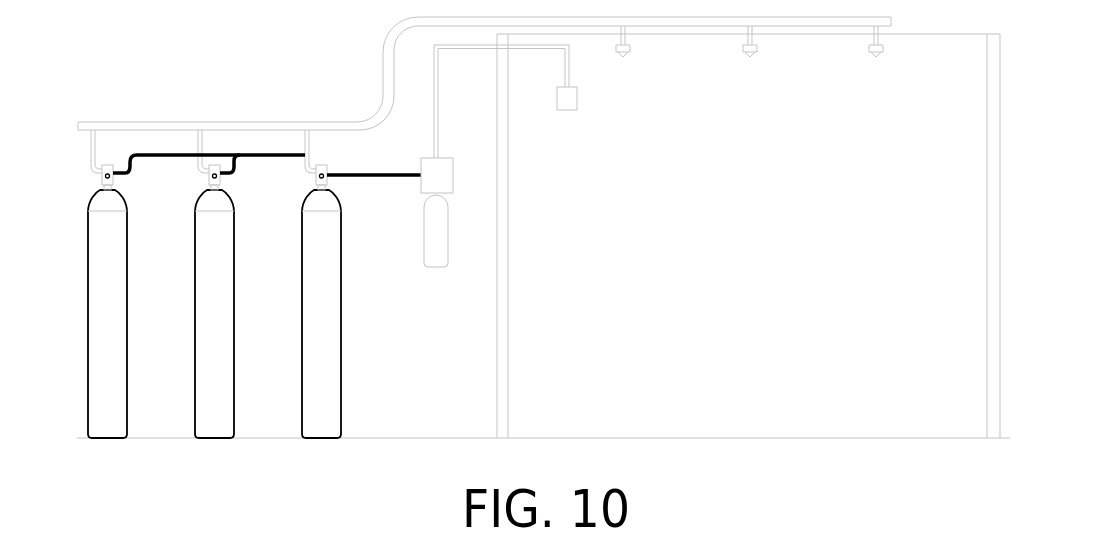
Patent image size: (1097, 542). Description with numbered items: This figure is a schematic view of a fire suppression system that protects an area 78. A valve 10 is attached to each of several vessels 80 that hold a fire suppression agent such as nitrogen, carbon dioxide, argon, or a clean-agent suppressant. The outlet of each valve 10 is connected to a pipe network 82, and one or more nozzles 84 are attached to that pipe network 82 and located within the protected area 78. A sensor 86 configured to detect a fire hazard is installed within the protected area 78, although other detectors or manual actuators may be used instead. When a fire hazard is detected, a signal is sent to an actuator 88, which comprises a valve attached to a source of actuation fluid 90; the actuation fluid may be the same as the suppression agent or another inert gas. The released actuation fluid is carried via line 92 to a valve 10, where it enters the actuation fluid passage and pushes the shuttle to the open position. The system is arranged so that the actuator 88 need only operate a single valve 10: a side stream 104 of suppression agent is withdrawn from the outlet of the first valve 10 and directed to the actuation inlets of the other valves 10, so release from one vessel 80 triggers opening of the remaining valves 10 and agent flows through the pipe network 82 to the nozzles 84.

The valve 10 is at (111, 178).
The protected area 78 is at (937, 203).
The vessels 80 is at (115, 343).
The pipe network 82 is at (327, 127).
The nozzles 84 is at (757, 49).
The sensor 86 is at (567, 106).
The actuator 88 is at (443, 174).
The source of actuation fluid 90 is at (434, 258).
The line 92 is at (368, 174).
The side stream 104 is at (254, 157).